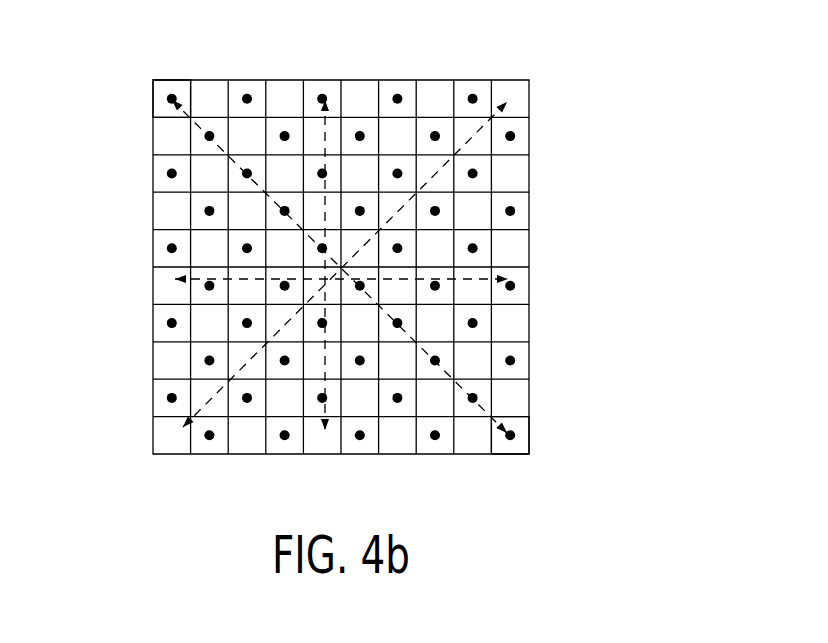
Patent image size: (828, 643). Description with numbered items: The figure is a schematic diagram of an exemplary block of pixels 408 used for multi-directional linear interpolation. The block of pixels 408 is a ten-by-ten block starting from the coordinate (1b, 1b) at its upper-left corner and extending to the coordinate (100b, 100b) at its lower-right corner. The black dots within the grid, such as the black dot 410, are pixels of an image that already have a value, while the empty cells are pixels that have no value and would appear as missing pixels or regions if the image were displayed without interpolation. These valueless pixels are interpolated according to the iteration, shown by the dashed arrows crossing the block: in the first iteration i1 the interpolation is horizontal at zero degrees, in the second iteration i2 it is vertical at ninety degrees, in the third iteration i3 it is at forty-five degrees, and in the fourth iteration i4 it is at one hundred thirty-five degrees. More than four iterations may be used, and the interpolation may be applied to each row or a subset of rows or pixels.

The block of pixels 408 is at (363, 244).
The black dot 410 is at (172, 96).
The starting coordinate (1b, 1b) 1b is at (152, 102).
The ending coordinate (100b, 100b) 100b is at (532, 442).
The first iteration i1 is at (508, 278).
The second iteration i2 is at (326, 128).
The third iteration i3 is at (200, 122).
The fourth iteration i4 is at (483, 123).